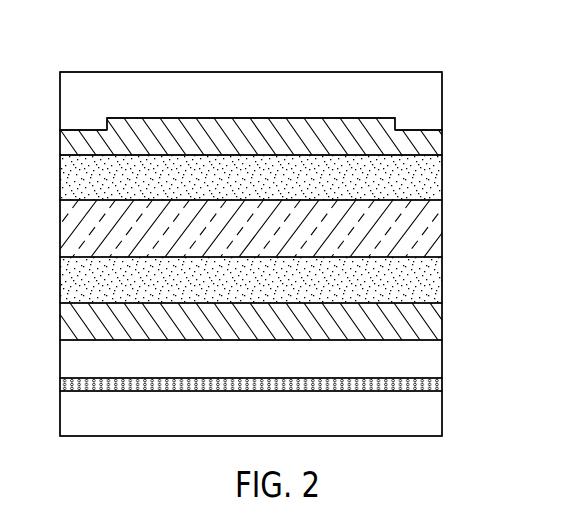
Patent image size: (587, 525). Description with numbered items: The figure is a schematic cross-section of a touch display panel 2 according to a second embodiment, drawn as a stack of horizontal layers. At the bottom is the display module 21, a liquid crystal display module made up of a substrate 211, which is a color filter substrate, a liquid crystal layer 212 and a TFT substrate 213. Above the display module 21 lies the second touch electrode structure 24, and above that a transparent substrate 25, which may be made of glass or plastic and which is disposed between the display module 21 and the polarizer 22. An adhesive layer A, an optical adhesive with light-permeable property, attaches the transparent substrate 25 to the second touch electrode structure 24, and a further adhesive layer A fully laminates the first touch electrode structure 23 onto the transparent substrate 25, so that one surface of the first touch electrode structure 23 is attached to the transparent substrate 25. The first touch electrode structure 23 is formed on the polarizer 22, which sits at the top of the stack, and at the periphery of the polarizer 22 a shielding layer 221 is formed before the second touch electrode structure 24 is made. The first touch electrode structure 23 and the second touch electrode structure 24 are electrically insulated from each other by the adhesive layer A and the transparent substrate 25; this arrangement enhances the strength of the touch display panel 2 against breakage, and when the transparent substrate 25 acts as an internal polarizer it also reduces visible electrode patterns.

The touch display panel 2 is at (98, 44).
The display module 21 is at (300, 388).
The substrate 211 is at (425, 360).
The liquid crystal layer 212 is at (432, 385).
The TFT substrate 213 is at (425, 416).
The polarizer 22 is at (427, 97).
The shielding layer 221 is at (430, 123).
The first touch electrode structure 23 is at (432, 143).
The second touch electrode structure 24 is at (428, 320).
The transparent substrate 25 is at (425, 230).
The adhesive layer A is at (432, 178).